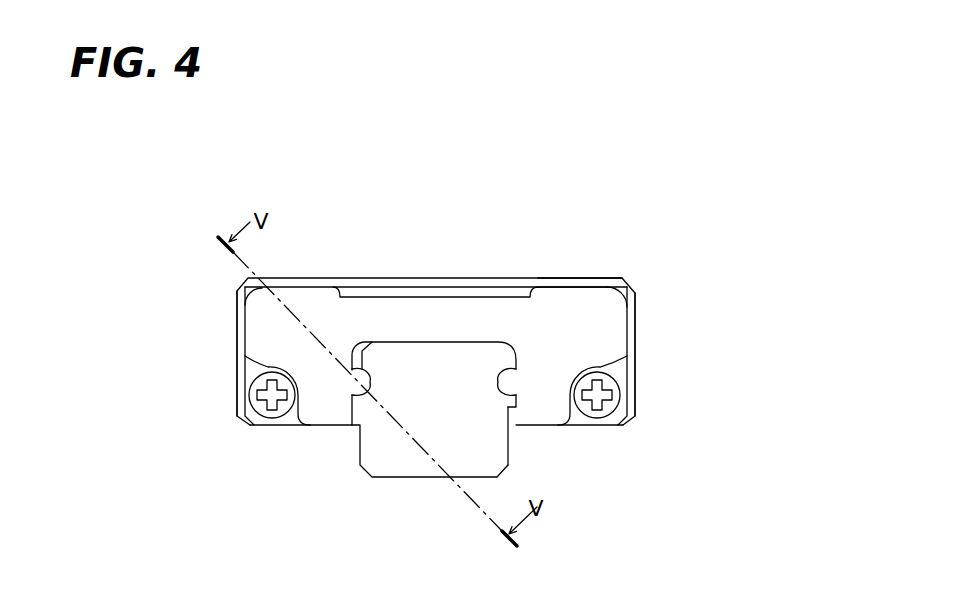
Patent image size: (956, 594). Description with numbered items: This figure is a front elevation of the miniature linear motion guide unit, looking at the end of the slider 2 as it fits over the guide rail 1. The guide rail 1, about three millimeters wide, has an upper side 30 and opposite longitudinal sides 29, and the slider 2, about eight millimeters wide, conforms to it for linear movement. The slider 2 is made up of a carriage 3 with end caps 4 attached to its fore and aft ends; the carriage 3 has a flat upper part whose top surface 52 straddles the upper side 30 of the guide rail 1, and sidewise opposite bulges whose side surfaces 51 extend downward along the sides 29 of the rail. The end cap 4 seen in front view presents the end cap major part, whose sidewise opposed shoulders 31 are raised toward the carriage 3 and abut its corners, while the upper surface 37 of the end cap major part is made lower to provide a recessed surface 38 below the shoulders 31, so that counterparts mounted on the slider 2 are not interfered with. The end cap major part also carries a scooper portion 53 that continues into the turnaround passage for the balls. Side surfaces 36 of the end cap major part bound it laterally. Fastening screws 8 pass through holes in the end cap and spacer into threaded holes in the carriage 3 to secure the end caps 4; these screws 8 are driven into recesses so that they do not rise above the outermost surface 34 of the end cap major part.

The guide rail 1 is at (377, 453).
The slider 2 is at (352, 278).
The carriage 3 is at (555, 285).
The end cap 4 is at (578, 317).
The fastening screw 8 is at (253, 395).
The side of the guide rail 29 is at (510, 450).
The upper side of the guide rail 30 is at (493, 342).
The shoulder 31 is at (265, 320).
The outermost surface of the end cap major part 34 is at (277, 334).
The side surface of the end cap major part 36 is at (270, 328).
The upper surface of the end cap major part 37 is at (300, 287).
The recessed surface 38 is at (440, 297).
The side surface of the bulge 51 is at (240, 368).
The top surface of the carriage 52 is at (578, 278).
The scooper portion 53 is at (353, 393).